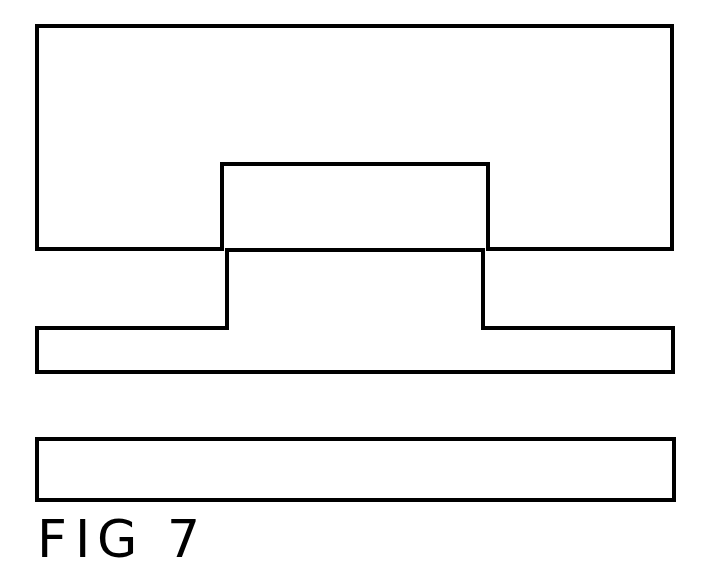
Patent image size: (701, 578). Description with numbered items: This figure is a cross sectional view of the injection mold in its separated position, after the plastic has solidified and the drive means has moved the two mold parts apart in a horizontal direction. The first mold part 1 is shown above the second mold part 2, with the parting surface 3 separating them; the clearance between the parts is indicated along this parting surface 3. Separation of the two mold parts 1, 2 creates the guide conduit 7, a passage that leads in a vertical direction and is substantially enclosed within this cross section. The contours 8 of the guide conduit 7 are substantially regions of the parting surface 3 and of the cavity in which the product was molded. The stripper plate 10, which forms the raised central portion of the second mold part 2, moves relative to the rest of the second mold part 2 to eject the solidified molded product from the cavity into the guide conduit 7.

The first mold part 1 is at (619, 76).
The second mold part 2 is at (623, 350).
The parting surface 3 is at (222, 208).
The guide conduit 7 is at (355, 193).
The contours of the guide conduit 8 is at (437, 166).
The stripper plate 10 is at (355, 311).